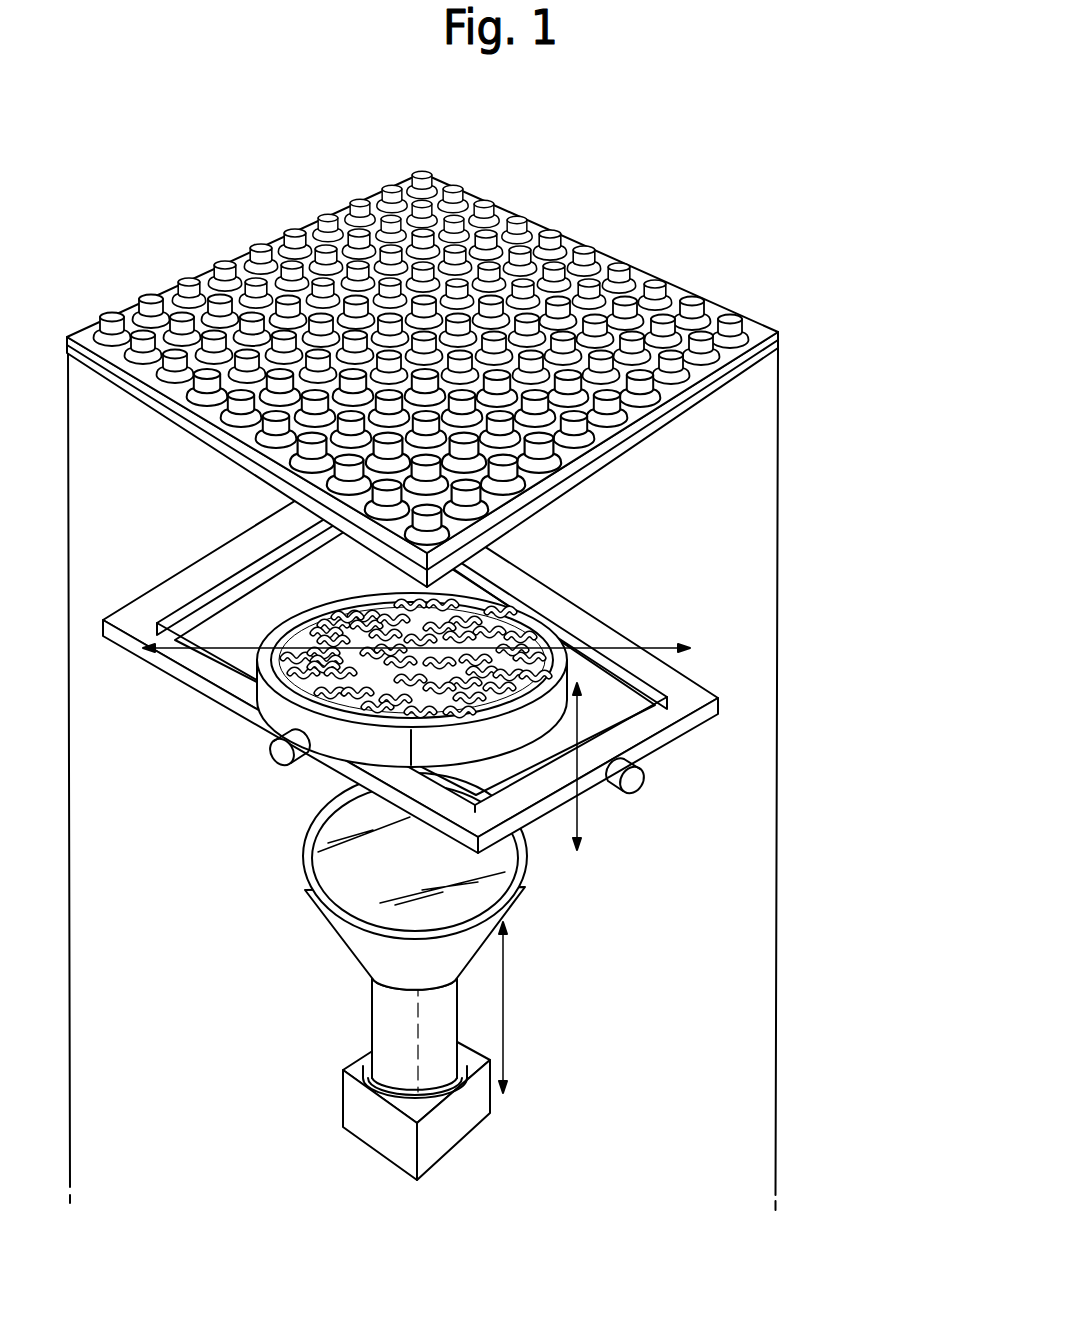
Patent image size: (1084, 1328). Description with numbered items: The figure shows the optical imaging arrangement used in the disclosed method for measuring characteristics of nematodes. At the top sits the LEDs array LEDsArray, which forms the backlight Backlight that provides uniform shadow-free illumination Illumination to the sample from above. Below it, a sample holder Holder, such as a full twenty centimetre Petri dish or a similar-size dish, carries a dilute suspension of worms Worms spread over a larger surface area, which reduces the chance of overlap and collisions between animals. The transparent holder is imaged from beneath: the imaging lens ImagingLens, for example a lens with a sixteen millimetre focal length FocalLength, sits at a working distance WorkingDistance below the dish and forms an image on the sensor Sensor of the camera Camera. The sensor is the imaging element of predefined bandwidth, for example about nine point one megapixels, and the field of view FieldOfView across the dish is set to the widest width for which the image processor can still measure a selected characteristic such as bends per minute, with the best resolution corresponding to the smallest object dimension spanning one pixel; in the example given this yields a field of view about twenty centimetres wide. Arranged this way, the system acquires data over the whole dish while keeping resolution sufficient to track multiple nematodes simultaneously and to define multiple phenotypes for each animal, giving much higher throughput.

The LEDs array LEDsArray is at (550, 232).
The backlight Backlight is at (485, 354).
The uniform shadow-free illumination Illumination is at (780, 520).
The worms Worms is at (322, 628).
The field of view FieldOfView is at (660, 646).
The working distance WorkingDistance is at (577, 823).
The lens ImagingLens is at (340, 876).
The focal length FocalLength is at (503, 1002).
The sample holder Holder is at (410, 658).
The imaging element Sensor is at (455, 1087).
The camera Camera is at (378, 1135).